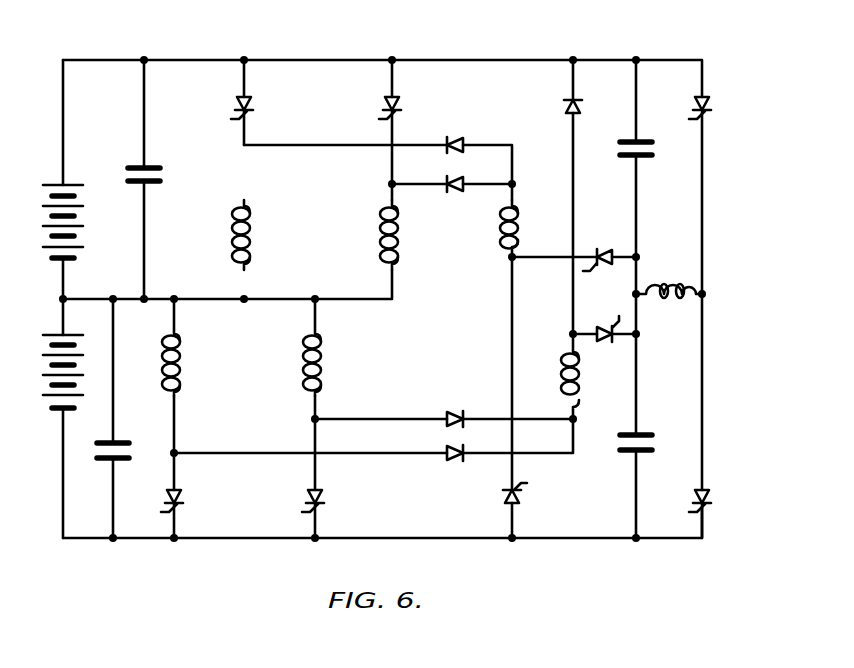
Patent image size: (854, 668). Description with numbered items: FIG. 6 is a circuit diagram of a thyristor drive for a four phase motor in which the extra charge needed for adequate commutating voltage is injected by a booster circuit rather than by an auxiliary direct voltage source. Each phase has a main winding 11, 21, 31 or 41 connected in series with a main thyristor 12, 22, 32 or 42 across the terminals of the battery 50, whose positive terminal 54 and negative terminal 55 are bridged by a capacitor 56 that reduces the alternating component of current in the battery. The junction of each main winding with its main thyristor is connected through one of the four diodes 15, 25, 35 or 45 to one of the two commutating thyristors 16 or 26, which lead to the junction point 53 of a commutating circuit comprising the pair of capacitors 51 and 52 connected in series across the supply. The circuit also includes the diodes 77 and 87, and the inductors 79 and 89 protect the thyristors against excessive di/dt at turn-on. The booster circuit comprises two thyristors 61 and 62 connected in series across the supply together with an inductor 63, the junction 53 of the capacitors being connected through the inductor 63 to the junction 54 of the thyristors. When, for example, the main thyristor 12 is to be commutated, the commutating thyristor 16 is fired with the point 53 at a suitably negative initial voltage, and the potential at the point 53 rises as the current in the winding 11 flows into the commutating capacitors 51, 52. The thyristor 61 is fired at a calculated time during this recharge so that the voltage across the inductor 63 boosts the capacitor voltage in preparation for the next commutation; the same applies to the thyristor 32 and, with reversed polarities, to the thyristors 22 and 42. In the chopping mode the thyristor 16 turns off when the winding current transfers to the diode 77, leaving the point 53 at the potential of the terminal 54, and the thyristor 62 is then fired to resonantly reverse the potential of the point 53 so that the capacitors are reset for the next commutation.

The main winding 11 is at (164, 363).
The main thyristor 12 is at (181, 494).
The diode 15 is at (453, 462).
The commutating thyristor 16 is at (602, 345).
The main winding 21 is at (233, 221).
The main thyristor 22 is at (251, 108).
The diode 25 is at (466, 143).
The commutating thyristor 26 is at (598, 250).
The main winding 31 is at (305, 365).
The main thyristor 32 is at (325, 494).
The diode 35 is at (459, 411).
The main winding 41 is at (380, 239).
The main thyristor 42 is at (400, 108).
The diode 45 is at (456, 192).
The battery 50 is at (77, 232).
The commutating capacitor 51 is at (649, 158).
The commutating capacitor 52 is at (641, 434).
The junction point 53 is at (638, 298).
The positive terminal 54 is at (222, 58).
The negative terminal 55 is at (130, 542).
The capacitor 56 is at (166, 298).
The thyristor 61 is at (696, 107).
The thyristor 62 is at (693, 498).
The inductor 63 is at (668, 283).
The diode 77 is at (565, 106).
The inductor 79 is at (565, 362).
The diode 87 is at (519, 490).
The inductor 89 is at (505, 237).